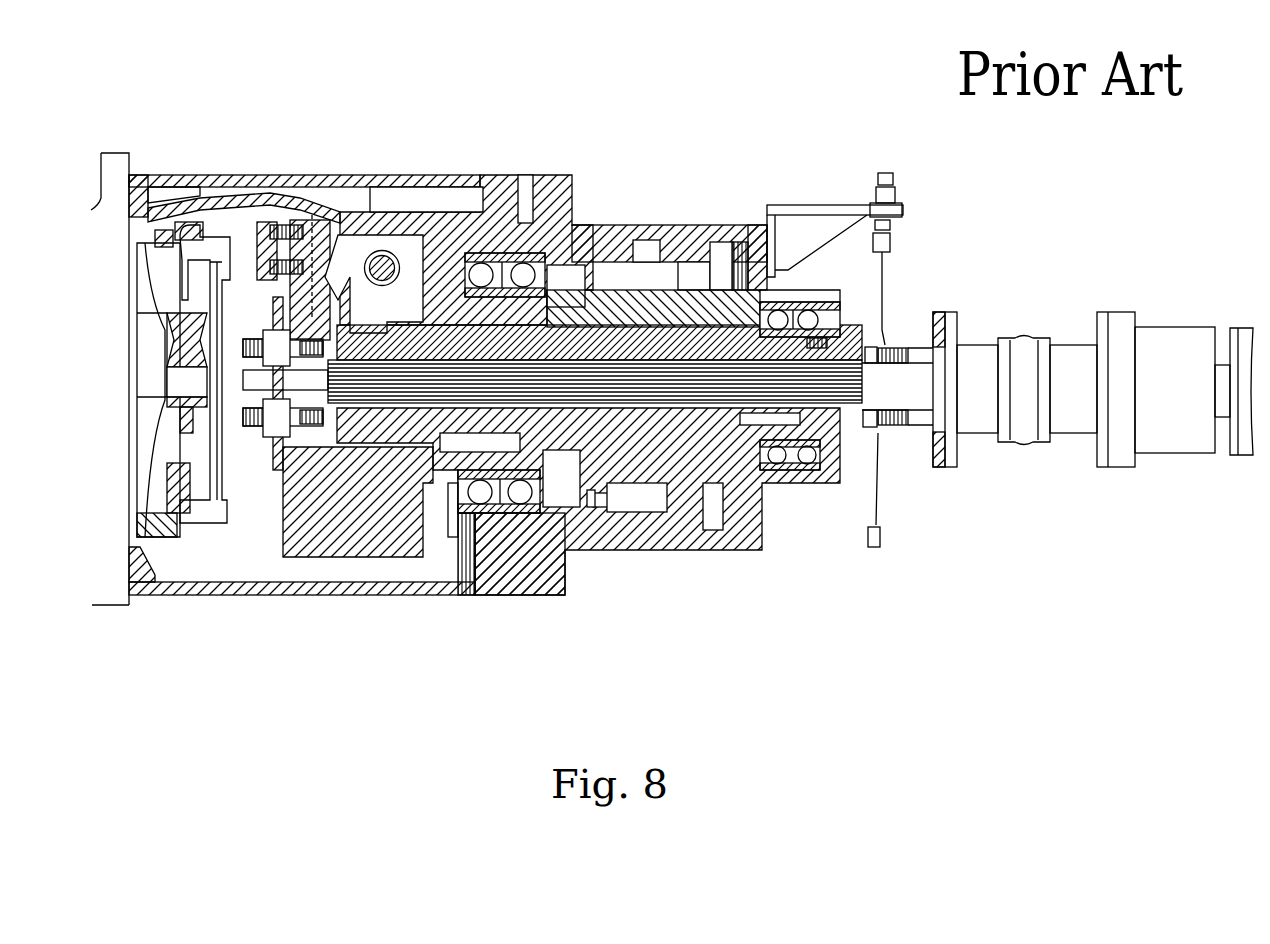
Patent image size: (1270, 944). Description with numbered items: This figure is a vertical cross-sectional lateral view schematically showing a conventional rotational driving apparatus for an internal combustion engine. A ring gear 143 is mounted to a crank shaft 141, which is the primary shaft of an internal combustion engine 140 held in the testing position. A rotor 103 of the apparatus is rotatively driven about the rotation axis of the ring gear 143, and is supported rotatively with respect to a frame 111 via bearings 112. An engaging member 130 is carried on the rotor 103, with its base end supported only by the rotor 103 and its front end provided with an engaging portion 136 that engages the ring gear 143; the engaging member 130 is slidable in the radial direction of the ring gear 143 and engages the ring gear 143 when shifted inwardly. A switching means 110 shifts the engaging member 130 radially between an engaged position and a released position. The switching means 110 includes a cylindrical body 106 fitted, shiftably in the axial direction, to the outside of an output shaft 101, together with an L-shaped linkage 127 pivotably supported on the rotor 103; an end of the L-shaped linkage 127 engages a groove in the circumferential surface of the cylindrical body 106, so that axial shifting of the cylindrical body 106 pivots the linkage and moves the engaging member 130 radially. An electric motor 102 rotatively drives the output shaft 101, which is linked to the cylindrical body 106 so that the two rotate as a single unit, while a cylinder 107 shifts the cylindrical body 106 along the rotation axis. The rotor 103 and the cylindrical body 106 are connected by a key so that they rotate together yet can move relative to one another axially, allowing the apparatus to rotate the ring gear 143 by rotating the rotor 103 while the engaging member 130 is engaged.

The output shaft 101 is at (692, 400).
The electric motor 102 is at (1230, 325).
The rotor 103 is at (358, 586).
The cylindrical body 106 is at (645, 512).
The cylinder 107 is at (669, 214).
The switching means 110 is at (492, 163).
The frame 111 is at (528, 595).
The bearings 112 is at (467, 587).
The L-shaped linkage 127 is at (352, 258).
The engaging member 130 is at (243, 190).
The engaging portion 136 is at (176, 172).
The internal combustion engine 140 is at (113, 612).
The crank shaft 141 is at (133, 383).
The ring gear 143 is at (148, 247).